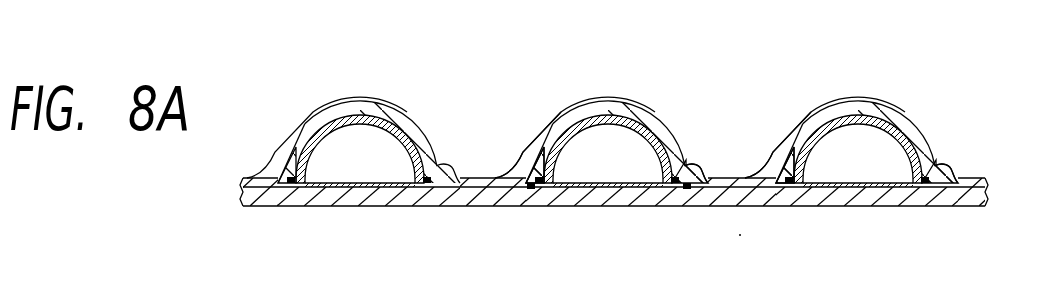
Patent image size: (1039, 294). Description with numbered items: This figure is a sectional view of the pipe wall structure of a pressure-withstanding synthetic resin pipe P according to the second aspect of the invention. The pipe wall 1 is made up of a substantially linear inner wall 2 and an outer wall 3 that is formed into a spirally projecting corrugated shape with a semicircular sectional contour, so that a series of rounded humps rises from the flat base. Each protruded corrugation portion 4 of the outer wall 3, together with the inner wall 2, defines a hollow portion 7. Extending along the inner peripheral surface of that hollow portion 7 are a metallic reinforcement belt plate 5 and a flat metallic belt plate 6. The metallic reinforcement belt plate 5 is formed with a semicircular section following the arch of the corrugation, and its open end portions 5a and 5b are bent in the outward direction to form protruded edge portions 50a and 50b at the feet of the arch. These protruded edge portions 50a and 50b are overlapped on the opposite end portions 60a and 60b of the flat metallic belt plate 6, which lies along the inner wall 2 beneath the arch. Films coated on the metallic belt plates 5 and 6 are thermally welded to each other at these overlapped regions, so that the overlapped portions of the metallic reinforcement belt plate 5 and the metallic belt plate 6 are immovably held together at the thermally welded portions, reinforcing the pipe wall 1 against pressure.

The pipe wall 1 is at (334, 90).
The inner wall 2 is at (367, 208).
The outer wall 3 is at (386, 101).
The protruded corrugation portion 4 is at (605, 96).
The metallic reinforcement belt plate 5 is at (635, 104).
The open end portion 5a is at (790, 166).
The open end portion 5b is at (945, 171).
The flat metallic belt plate 6 is at (628, 208).
The hollow portion 7 is at (574, 132).
The protruded edge portion 50a is at (540, 172).
The protruded edge portion 50b is at (688, 173).
The end portion of metallic belt plate 60a is at (533, 208).
The end portion of metallic belt plate 60b is at (680, 208).
The pressure-withstanding synthetic resin pipe P is at (283, 118).